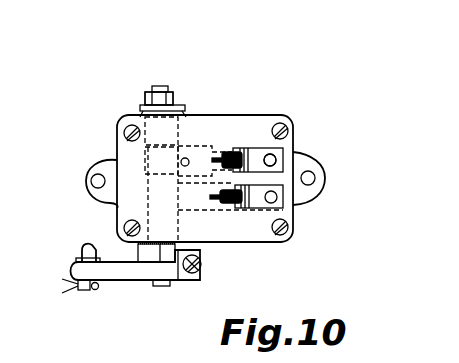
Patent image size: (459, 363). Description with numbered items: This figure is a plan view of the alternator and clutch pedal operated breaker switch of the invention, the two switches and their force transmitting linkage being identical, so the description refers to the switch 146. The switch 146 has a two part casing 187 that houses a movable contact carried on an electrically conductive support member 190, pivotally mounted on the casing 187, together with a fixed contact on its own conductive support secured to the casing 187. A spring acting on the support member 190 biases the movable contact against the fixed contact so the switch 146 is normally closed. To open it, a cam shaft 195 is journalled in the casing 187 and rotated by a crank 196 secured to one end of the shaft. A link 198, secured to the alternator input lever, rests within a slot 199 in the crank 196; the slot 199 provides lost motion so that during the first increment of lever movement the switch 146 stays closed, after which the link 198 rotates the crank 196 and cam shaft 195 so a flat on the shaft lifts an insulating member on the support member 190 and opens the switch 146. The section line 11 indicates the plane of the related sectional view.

The section line 11- 11 is at (84, 133).
The alternator operated switch 146 is at (232, 108).
The two part casing 187 is at (128, 198).
The support member 190 is at (243, 148).
The cam shaft 195 is at (163, 130).
The crank 196 is at (136, 272).
The link 198 is at (84, 247).
The slot 199 is at (22, 356).